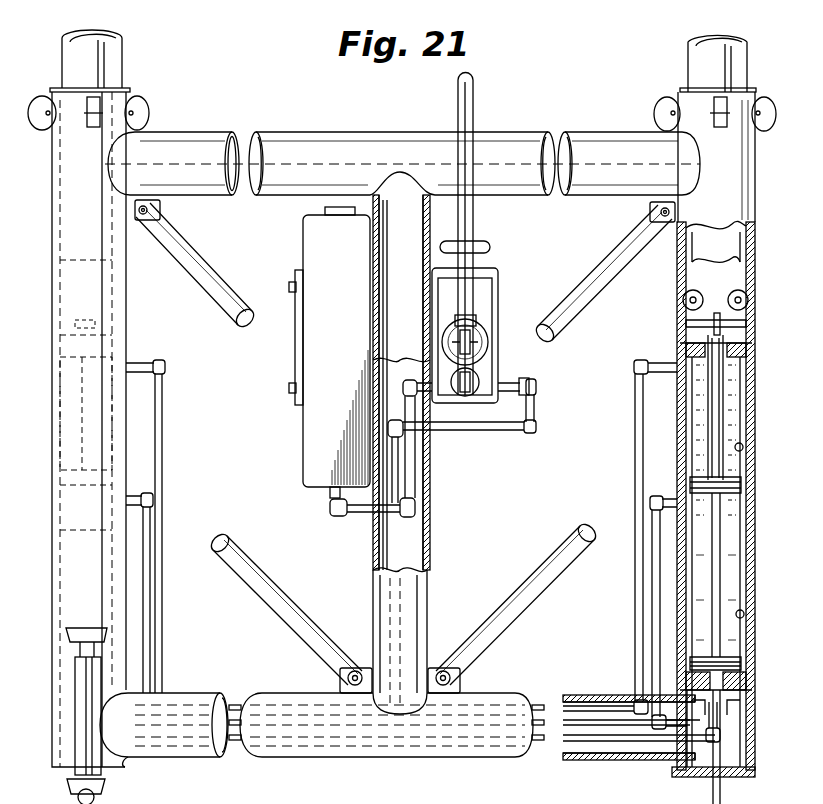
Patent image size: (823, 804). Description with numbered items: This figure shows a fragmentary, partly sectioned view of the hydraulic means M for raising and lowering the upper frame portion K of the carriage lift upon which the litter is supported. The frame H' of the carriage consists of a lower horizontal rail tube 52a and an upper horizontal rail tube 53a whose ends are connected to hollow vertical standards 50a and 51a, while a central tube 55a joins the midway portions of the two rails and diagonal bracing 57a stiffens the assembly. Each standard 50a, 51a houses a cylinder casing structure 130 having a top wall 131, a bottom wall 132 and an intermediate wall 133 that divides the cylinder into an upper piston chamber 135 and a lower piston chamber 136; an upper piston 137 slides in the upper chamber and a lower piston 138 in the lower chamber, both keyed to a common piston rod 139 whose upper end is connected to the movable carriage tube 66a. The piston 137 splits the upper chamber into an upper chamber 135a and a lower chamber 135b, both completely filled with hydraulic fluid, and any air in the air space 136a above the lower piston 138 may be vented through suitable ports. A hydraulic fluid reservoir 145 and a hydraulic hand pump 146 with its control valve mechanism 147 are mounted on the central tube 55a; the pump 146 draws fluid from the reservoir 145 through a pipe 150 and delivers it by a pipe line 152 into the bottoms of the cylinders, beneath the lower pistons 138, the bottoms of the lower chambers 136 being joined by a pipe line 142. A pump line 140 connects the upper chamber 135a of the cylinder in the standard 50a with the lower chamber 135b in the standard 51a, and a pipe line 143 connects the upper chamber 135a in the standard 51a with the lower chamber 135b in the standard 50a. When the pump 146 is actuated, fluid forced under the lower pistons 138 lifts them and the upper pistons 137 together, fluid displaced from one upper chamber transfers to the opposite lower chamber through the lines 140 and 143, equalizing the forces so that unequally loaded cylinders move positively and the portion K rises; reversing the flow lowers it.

The upper frame portion K is at (120, 72).
The movable carriage tube 66a is at (78, 60).
The vertical standard 50a is at (70, 290).
The frame H' is at (331, 154).
The upper horizontal rail tube 53a is at (500, 135).
The vertical standard 51a is at (742, 207).
The control valve mechanism 147 is at (486, 248).
The hydraulic hand pump 146 is at (478, 308).
The hydraulic means M is at (310, 332).
The hydraulic fluid reservoir 145 is at (308, 432).
The pump line 140 is at (164, 462).
The top wall 131 is at (744, 346).
The upper chamber 135a is at (748, 404).
The upper piston chamber 135 is at (742, 448).
The piston 137 is at (52, 488).
The lower chamber 135b is at (745, 486).
The intermediate wall 133 is at (745, 502).
The common piston rod 139 is at (52, 590).
The cylinder casing structure 130 is at (752, 576).
The air space 136a is at (744, 615).
The piston 138 is at (52, 668).
The lower piston chamber 136 is at (748, 676).
The bottom wall 132 is at (736, 702).
The pipe line 143 is at (638, 640).
The pipe line 142 is at (656, 736).
The pipe 150 is at (350, 515).
The pipe line 152 is at (400, 552).
The central tube 55a is at (406, 594).
The diagonal bracing 57a is at (270, 590).
The lower horizontal rail tube 52a is at (486, 695).